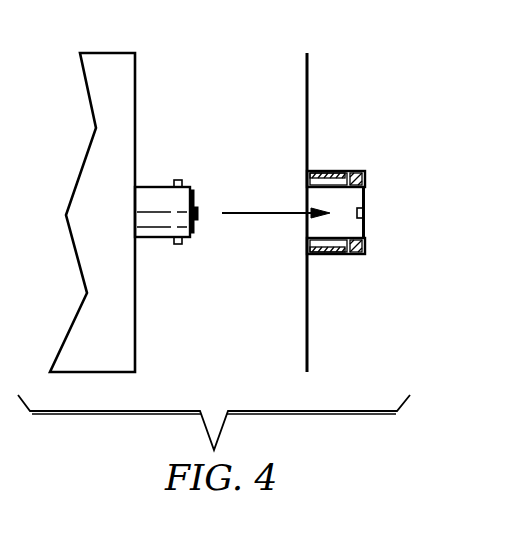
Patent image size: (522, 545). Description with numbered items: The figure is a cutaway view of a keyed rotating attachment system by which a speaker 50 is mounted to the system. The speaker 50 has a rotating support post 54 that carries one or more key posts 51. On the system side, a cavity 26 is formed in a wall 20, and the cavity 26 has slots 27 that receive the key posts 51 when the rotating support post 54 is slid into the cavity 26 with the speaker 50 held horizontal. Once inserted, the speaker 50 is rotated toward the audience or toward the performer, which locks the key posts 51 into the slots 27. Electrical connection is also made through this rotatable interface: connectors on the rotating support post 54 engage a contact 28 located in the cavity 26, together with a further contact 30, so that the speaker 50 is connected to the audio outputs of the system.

The speaker 50 is at (109, 65).
The device housing wall 20 is at (305, 78).
The rotating support post 54 is at (150, 230).
The key post 51 is at (181, 180).
The slot 27 is at (344, 171).
The cavity 26 is at (332, 254).
The contact 28 is at (364, 195).
The contact pin 30 is at (364, 212).